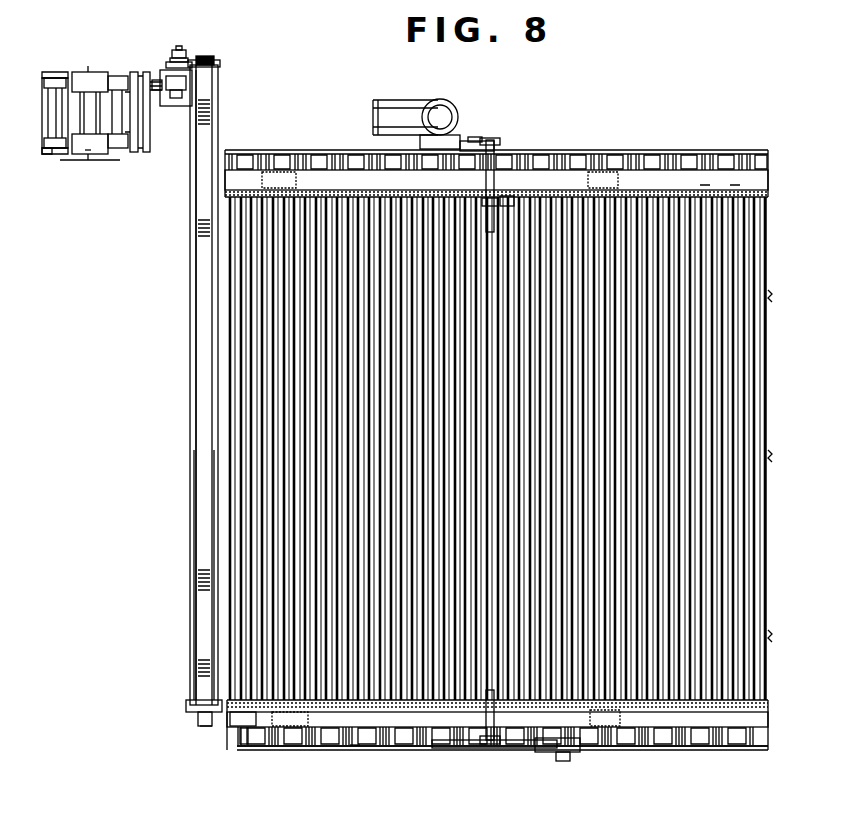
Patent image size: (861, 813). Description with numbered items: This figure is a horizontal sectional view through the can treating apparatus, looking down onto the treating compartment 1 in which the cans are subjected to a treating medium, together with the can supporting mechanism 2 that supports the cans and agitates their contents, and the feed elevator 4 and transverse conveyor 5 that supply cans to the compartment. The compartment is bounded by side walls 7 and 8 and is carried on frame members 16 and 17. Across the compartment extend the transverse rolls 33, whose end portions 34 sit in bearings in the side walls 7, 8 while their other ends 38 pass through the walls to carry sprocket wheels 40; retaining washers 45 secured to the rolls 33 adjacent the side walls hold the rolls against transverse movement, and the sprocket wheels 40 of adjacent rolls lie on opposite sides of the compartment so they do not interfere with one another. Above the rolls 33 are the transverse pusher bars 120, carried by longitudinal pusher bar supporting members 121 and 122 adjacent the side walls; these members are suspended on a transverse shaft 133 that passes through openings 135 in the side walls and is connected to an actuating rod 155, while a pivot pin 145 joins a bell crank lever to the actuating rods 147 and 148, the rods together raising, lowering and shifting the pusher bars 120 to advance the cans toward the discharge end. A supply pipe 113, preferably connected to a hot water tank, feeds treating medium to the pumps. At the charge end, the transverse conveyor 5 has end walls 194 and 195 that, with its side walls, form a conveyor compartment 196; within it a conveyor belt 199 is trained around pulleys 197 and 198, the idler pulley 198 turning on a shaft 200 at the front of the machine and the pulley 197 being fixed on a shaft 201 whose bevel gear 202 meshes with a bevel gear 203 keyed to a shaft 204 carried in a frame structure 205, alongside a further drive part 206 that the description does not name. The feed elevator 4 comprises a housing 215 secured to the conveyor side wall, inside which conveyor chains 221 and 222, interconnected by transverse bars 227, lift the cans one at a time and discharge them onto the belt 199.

The treating compartment 1 is at (88, 152).
The can supporting mechanism 2 is at (352, 752).
The feed elevator 4 is at (90, 176).
The transverse conveyor 5 is at (214, 141).
The side wall 7 is at (768, 713).
The side wall 8 is at (768, 186).
The frame member 16 is at (284, 714).
The frame member 17 is at (616, 712).
The rolls 33 is at (730, 388).
The end portions 34 is at (387, 720).
The other ends 38 is at (633, 190).
The sprocket wheels 40 is at (335, 155).
The retaining washers 45 is at (710, 189).
The supply conduit 113 is at (405, 96).
The pusher bars 120 is at (705, 497).
The pusher bar supporting member 121 is at (766, 200).
The pusher bar supporting member 122 is at (766, 700).
The transverse shaft 133 is at (494, 230).
The opening 135 is at (537, 448).
The pivot pin 145 is at (568, 760).
The actuating rod 147 is at (675, 750).
The actuating rod 148 is at (478, 750).
The actuating rod 155 is at (465, 143).
The end wall 194 is at (222, 67).
The end wall 195 is at (204, 718).
The conveyor compartment 196 is at (192, 668).
The conveyor belt pulley 197 is at (220, 96).
The conveyor belt pulley 198 is at (205, 728).
The conveyor belt 199 is at (192, 572).
The shaft 200 is at (190, 705).
The shaft 201 is at (190, 108).
The bevel gear 202 is at (178, 100).
The bevel gear 203 is at (206, 58).
The shaft 204 is at (182, 50).
The frame structure 205 is at (154, 82).
The gear hub 206 is at (168, 62).
The housing structure 215 is at (100, 84).
The conveyor chain 221 is at (68, 78).
The conveyor chain 222 is at (50, 152).
The transverse bars 227 is at (136, 130).